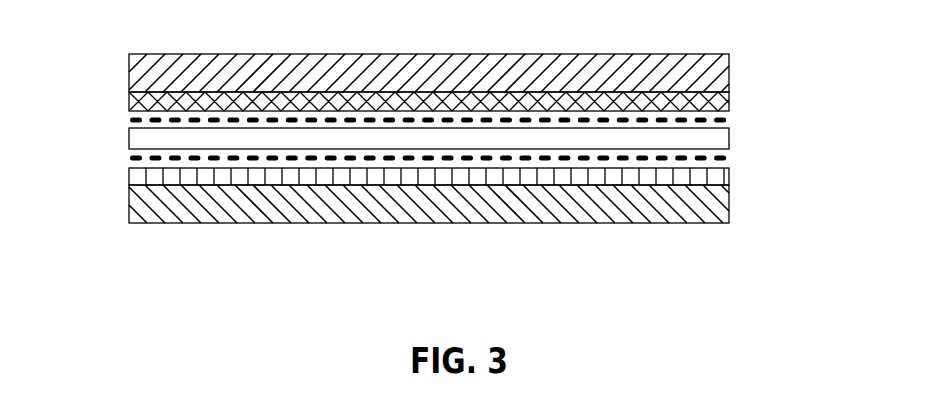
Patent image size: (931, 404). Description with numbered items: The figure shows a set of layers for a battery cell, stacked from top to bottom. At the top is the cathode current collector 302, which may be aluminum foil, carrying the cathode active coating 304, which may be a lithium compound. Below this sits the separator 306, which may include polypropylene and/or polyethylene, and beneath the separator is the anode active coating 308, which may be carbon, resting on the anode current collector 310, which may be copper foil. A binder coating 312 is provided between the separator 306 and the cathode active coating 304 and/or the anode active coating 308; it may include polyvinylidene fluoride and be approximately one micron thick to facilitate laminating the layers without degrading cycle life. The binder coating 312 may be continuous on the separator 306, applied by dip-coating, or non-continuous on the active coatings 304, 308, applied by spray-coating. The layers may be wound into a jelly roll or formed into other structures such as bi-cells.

The cathode current collector 302 is at (714, 61).
The cathode active coating 304 is at (715, 107).
The separator 306 is at (715, 135).
The anode active coating 308 is at (715, 177).
The anode current collector 310 is at (715, 210).
The binder coating 312 is at (128, 160).